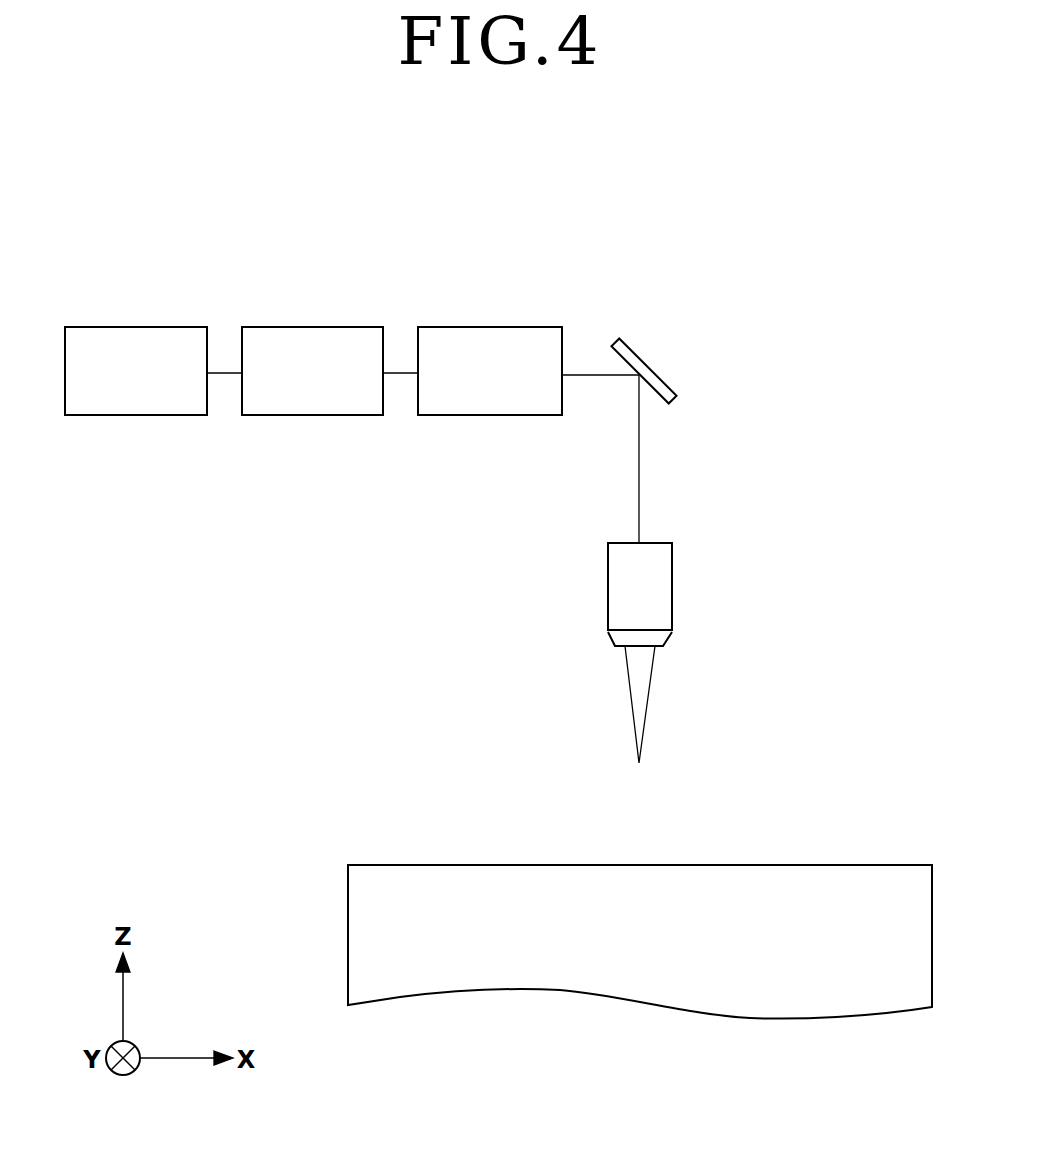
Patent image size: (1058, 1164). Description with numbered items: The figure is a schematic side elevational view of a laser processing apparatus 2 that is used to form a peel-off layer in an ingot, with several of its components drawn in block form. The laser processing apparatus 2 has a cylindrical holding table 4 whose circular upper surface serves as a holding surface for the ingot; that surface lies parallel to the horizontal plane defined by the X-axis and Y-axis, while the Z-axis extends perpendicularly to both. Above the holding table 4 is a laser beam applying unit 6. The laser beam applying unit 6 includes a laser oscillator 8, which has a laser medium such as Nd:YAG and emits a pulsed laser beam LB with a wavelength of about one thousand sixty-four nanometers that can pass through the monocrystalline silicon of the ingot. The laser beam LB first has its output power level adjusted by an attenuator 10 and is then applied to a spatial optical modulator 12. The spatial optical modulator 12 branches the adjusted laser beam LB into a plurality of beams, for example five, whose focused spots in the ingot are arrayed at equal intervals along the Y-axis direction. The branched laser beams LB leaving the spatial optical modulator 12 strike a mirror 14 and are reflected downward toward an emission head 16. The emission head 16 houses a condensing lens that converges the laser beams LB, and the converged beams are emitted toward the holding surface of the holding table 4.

The laser processing apparatus 2 is at (817, 280).
The holding table 4 is at (828, 865).
The laser beam applying unit 6 is at (386, 517).
The laser oscillator 8 is at (120, 327).
The attenuator 10 is at (300, 327).
The spatial optical modulator 12 is at (482, 327).
The mirror 14 is at (648, 365).
The emission head 16 is at (608, 588).
The laser beam LB is at (650, 690).